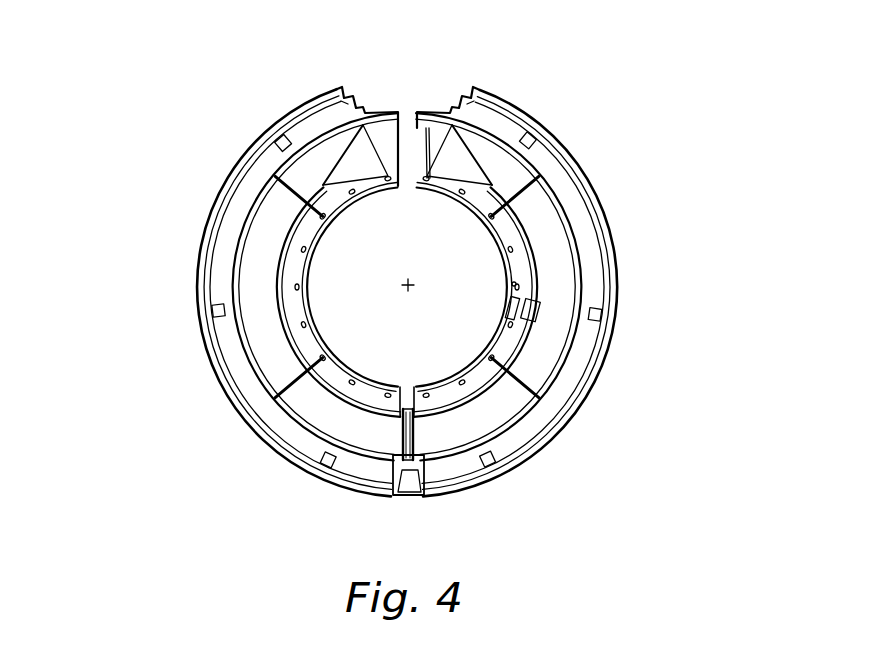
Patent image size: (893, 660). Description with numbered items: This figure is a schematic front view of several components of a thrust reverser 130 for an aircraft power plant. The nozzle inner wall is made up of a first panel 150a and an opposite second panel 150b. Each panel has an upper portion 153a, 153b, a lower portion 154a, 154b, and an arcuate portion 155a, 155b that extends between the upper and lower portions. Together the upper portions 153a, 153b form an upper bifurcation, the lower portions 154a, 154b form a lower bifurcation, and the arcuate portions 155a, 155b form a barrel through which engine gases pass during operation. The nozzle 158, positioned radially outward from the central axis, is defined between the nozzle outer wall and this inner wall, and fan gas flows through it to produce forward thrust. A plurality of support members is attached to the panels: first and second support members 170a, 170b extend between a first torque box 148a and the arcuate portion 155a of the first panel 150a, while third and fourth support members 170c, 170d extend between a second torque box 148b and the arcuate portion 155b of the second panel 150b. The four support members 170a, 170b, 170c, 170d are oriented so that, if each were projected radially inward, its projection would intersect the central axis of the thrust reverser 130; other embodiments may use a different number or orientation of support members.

The thrust reverser 130 is at (517, 50).
The first torque box 148a is at (580, 368).
The second torque box 148b is at (238, 364).
The first panel 150a is at (525, 261).
The second panel 150b is at (290, 263).
The upper portion 153a is at (458, 130).
The upper portion 153b is at (384, 140).
The lower portion 154a is at (414, 443).
The lower portion 154b is at (402, 425).
The arcuate portion 155a is at (527, 285).
The arcuate portion 155b is at (307, 238).
The nozzle 158 is at (513, 180).
The first support member 170a is at (531, 200).
The second support member 170b is at (436, 410).
The third support member 170c is at (283, 200).
The fourth support member 170d is at (322, 408).